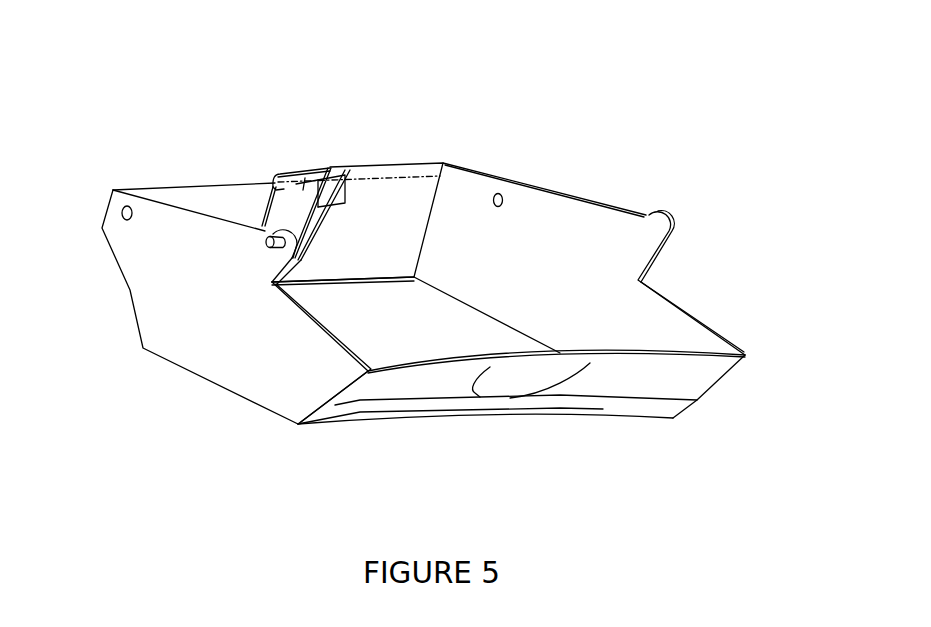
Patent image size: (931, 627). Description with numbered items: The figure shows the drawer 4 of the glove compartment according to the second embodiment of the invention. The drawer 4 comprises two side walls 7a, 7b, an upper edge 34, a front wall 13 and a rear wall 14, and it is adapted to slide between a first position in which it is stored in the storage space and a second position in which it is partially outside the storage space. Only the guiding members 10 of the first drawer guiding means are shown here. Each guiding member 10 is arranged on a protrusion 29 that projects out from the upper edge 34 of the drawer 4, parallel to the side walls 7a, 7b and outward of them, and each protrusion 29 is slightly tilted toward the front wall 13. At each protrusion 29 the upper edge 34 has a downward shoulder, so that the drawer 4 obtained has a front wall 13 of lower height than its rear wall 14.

The drawer 4 is at (235, 388).
The side wall 7a is at (680, 323).
The side wall 7b is at (300, 402).
The guiding member 10 is at (277, 248).
The front wall 13 is at (460, 390).
The rear wall 14 is at (270, 188).
The protrusion 29 is at (250, 247).
The upper edge 34 is at (532, 182).